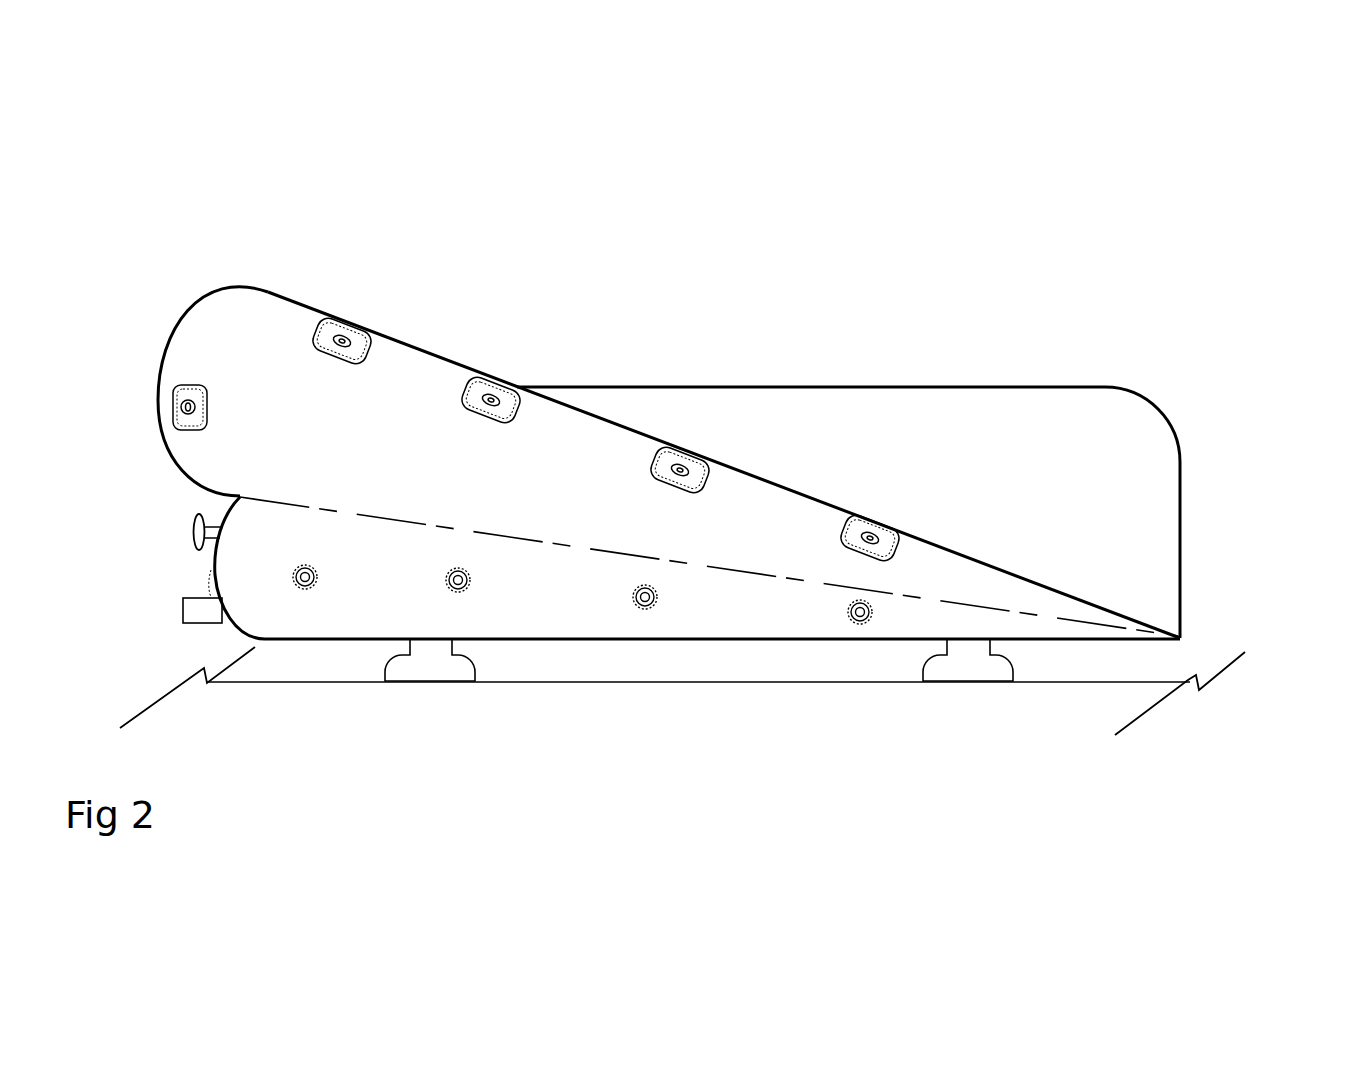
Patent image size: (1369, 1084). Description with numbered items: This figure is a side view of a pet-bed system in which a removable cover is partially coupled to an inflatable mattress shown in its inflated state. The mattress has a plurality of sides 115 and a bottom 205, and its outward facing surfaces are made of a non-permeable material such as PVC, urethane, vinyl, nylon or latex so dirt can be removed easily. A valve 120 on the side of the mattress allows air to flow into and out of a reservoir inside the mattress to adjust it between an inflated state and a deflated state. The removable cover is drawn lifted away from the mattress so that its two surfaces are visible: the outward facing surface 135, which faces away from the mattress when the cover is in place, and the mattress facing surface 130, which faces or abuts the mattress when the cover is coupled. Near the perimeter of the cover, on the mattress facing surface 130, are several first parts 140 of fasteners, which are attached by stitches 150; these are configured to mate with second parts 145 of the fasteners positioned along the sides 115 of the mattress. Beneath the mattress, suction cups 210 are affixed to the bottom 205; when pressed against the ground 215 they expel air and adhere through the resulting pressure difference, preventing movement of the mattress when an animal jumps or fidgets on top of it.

The sides 115 is at (209, 559).
The valve 120 is at (194, 528).
The mattress facing surface 130 is at (636, 426).
The outward facing surface 135 is at (927, 445).
The first parts of fasteners 140 is at (205, 410).
The second parts of fasteners 145 is at (317, 578).
The stitches 150 is at (334, 323).
The bottom 205 is at (580, 662).
The suction cups 210 is at (1017, 682).
The ground 215 is at (1132, 693).